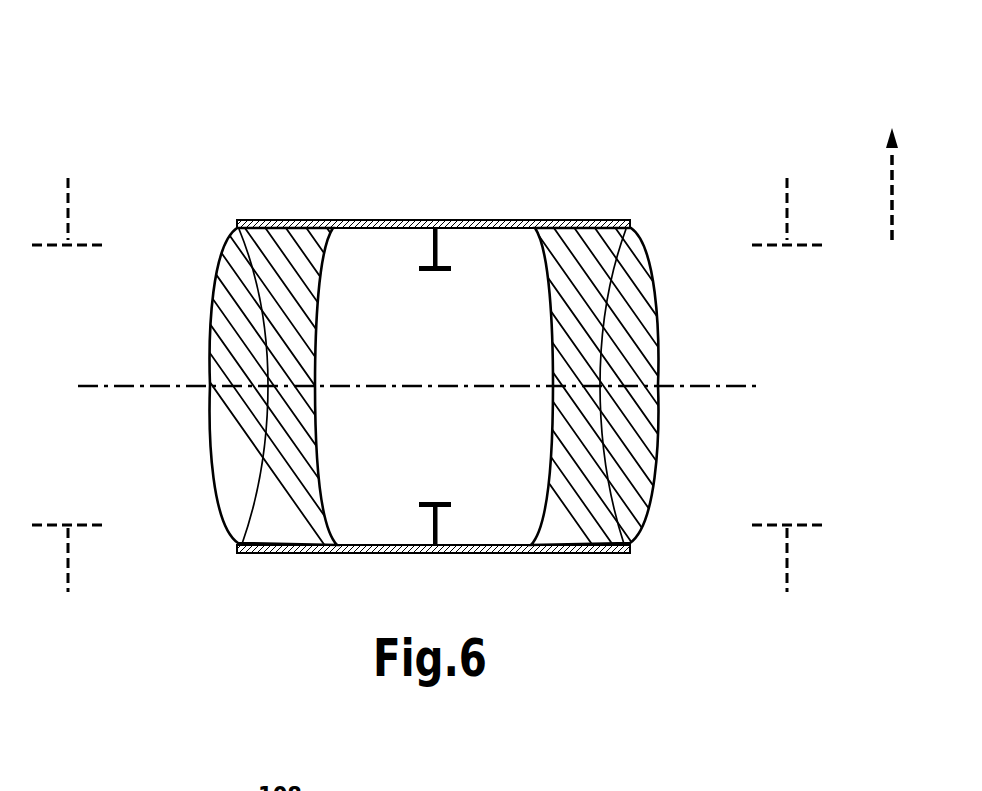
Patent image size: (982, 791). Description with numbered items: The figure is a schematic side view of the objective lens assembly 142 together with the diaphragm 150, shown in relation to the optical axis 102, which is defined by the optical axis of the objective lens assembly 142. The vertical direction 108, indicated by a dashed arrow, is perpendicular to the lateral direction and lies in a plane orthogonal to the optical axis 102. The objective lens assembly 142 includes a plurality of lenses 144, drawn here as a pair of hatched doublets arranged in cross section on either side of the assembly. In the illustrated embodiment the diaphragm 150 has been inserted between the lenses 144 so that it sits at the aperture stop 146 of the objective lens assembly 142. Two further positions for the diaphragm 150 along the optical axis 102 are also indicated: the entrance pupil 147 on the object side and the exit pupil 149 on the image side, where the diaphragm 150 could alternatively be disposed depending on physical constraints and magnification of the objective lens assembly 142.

The objective lens assembly 142 is at (456, 104).
The lenses 144 is at (210, 256).
The aperture stop 146 is at (502, 343).
The diaphragm 150 is at (450, 250).
The optical axis 102 is at (688, 386).
The vertical direction 108 is at (889, 207).
The entrance pupil 147 is at (92, 550).
The exit pupil 149 is at (770, 550).